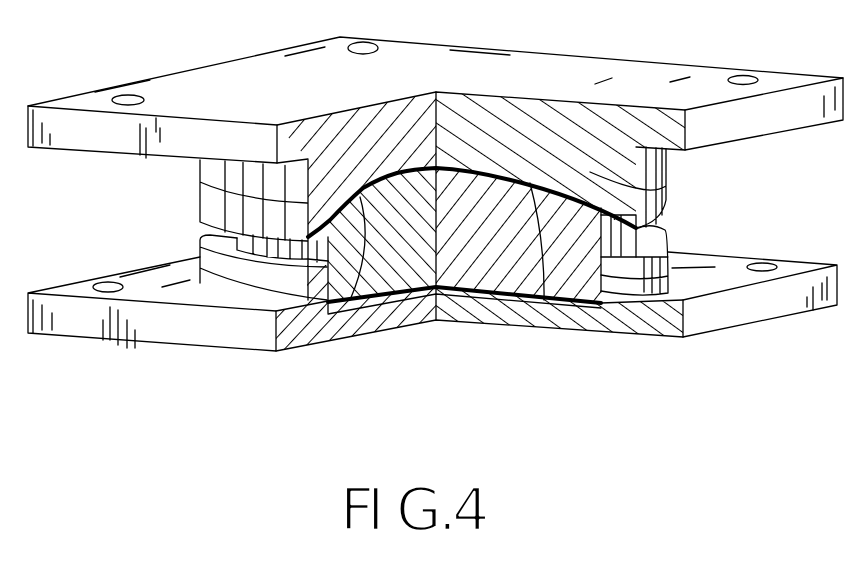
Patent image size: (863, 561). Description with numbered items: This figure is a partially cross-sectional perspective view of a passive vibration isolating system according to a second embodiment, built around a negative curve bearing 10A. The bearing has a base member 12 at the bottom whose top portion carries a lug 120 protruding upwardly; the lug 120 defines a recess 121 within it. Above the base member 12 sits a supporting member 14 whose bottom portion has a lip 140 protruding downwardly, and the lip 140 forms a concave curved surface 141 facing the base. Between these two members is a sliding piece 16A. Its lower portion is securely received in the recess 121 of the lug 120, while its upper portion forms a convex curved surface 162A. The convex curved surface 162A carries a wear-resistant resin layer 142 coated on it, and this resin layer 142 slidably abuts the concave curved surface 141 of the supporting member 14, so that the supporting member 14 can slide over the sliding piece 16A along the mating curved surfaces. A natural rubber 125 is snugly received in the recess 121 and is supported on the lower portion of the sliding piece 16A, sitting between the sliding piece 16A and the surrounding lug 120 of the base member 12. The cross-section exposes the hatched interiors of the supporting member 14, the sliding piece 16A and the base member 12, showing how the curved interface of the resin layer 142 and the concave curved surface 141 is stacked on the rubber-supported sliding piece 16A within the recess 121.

The supporting member 14 is at (798, 100).
The concave curved surface 141 is at (570, 194).
The lip 140 is at (666, 189).
The negative curve bearing 10A is at (753, 195).
The lug 120 is at (668, 260).
The base member 12 is at (722, 313).
The recess 121 is at (620, 285).
The wear-resistant resin layer 142 is at (544, 300).
The natural rubber 125 is at (525, 290).
The sliding piece 16A is at (488, 267).
The convex curved surface 162A is at (350, 300).